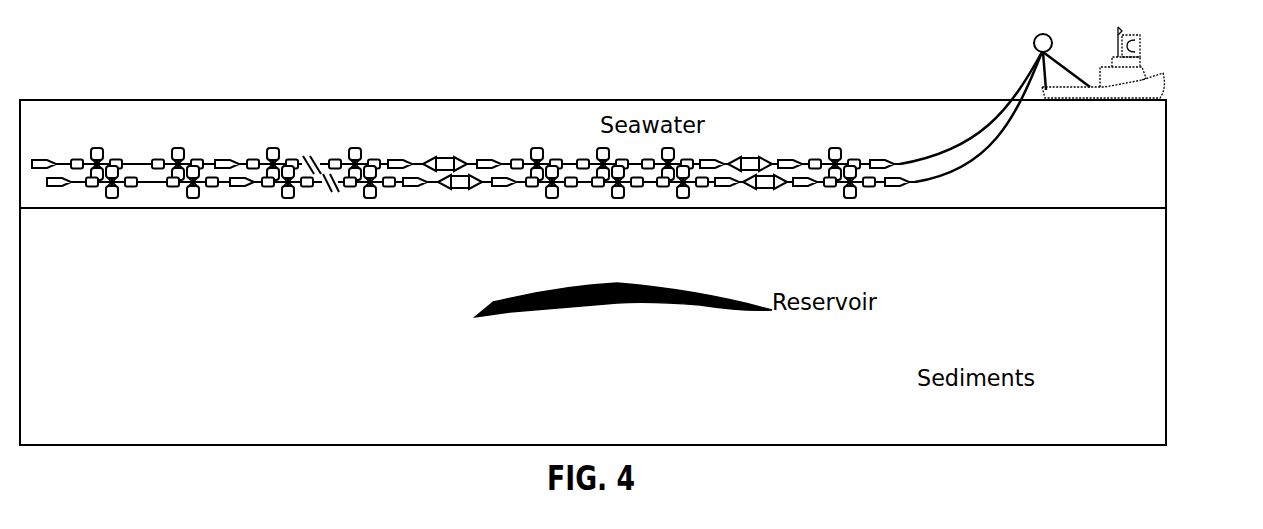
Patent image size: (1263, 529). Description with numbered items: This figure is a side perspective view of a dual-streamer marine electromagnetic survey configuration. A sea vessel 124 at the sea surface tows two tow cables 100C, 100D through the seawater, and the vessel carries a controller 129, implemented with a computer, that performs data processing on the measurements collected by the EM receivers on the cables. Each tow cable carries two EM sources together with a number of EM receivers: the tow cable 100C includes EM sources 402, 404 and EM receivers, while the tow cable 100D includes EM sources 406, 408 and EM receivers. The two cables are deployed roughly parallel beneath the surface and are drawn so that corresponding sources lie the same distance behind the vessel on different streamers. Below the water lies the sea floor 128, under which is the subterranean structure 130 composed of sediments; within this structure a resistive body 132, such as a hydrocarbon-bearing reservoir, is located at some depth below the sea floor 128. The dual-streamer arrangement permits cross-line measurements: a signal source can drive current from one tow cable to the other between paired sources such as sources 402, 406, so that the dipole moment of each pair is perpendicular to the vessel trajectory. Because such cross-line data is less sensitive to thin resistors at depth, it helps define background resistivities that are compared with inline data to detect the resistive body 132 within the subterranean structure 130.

The tow cable 100C is at (943, 152).
The tow cable 100D is at (948, 163).
The sea vessel 124 is at (1160, 77).
The sea floor 128 is at (1153, 206).
The controller 129 is at (1140, 46).
The subterranean structure 130 is at (1168, 208).
The resistive body 132 is at (625, 302).
The EM source 402 is at (752, 158).
The EM source 404 is at (443, 158).
The EM source 406 is at (768, 190).
The EM source 408 is at (457, 190).